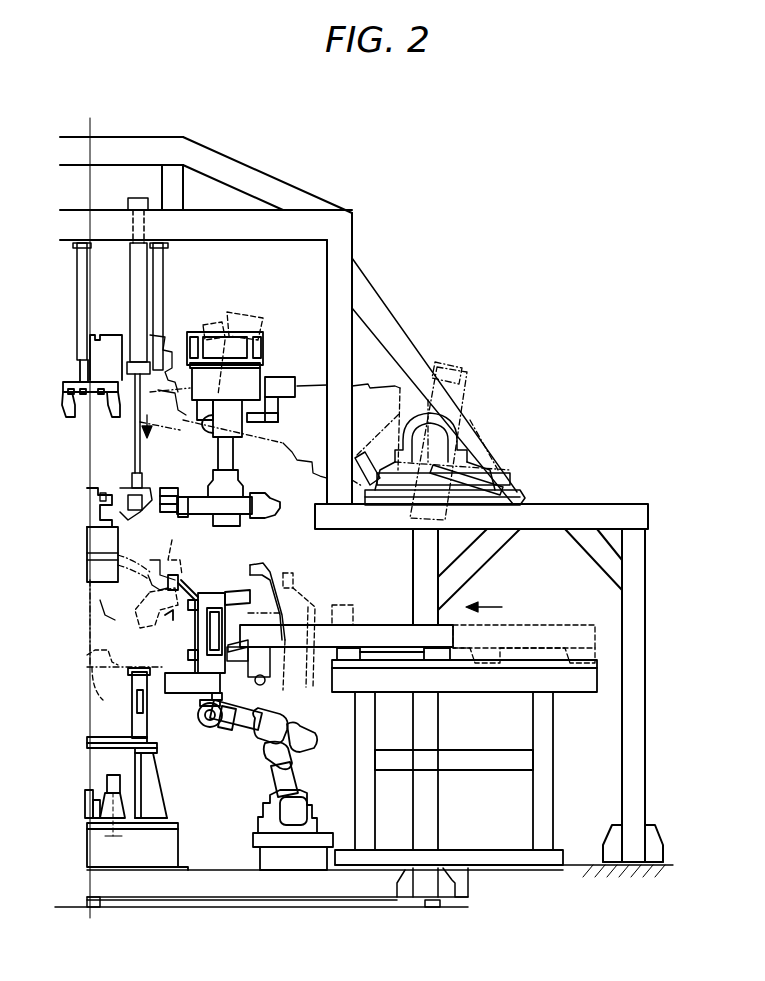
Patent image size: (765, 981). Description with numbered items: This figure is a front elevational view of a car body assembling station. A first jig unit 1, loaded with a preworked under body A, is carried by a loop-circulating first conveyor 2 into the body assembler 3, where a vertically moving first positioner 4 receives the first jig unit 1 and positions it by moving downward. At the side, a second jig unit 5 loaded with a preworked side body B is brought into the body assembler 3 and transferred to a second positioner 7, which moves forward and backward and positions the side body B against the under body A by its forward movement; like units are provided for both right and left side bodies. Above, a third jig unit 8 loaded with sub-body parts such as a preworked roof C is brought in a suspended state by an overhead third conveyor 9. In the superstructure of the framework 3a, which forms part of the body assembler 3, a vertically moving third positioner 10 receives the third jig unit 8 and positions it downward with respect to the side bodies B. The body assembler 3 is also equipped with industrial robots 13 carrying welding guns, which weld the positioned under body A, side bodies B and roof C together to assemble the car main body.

The first jig unit 1 is at (150, 727).
The first conveyor 2 is at (143, 782).
The body assembler 3 is at (325, 190).
The framework 3a is at (376, 294).
The first positioner 4 is at (96, 779).
The second jig unit 5 is at (194, 586).
The second positioner 7 is at (385, 618).
The third jig unit 8 is at (82, 490).
The third conveyor 9 is at (66, 378).
The third positioner 10 is at (135, 442).
The industrial robot 13 is at (246, 517).
The under body A is at (126, 650).
The side body B is at (273, 574).
The roof C is at (100, 553).